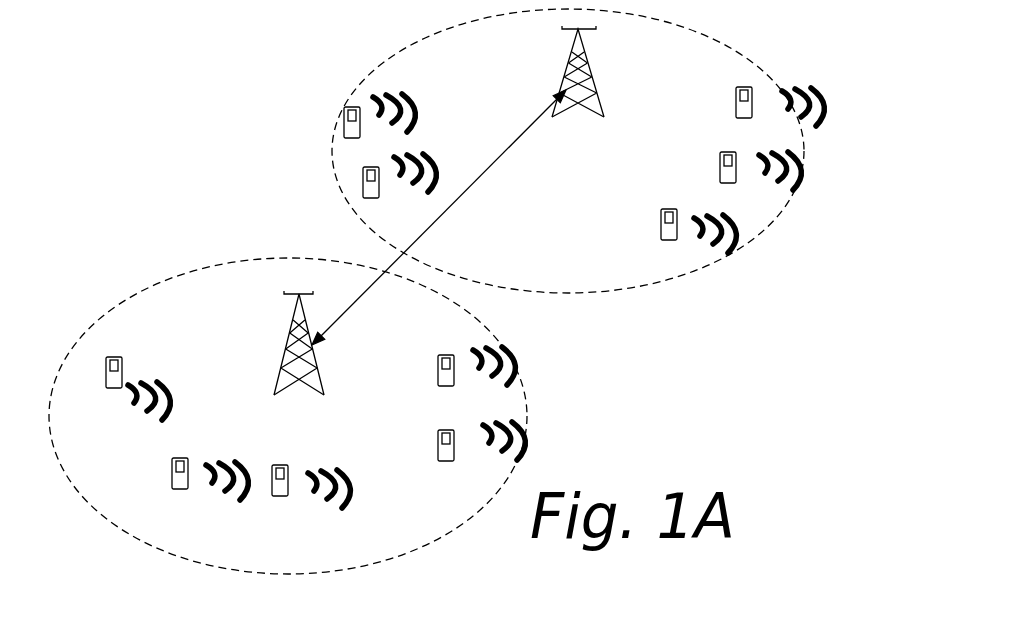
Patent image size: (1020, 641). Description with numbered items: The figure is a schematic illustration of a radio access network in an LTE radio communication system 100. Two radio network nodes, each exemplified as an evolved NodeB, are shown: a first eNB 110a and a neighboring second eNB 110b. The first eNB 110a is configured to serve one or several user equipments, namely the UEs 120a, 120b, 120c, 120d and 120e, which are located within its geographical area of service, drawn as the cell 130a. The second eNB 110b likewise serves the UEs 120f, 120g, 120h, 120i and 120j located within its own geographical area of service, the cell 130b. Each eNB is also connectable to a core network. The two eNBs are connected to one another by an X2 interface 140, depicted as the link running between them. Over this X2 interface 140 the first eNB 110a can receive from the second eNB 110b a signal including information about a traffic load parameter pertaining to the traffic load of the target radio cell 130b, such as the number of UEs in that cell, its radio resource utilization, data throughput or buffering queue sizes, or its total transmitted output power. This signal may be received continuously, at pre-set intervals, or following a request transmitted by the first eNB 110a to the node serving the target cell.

The LTE radio communication system 100 is at (281, 154).
The first radio network node 110a is at (292, 318).
The second radio network node 110b is at (594, 72).
The user equipment 120a is at (116, 388).
The user equipment 120b is at (205, 486).
The user equipment 120c is at (307, 494).
The user equipment 120d is at (478, 456).
The user equipment 120e is at (473, 381).
The user equipment 120f is at (378, 126).
The user equipment 120g is at (397, 187).
The user equipment 120h is at (696, 235).
The user equipment 120i is at (759, 177).
The user equipment 120j is at (779, 112).
The cell 130a is at (183, 287).
The target radio cell 130b is at (582, 247).
The X2 interface 140 is at (462, 184).